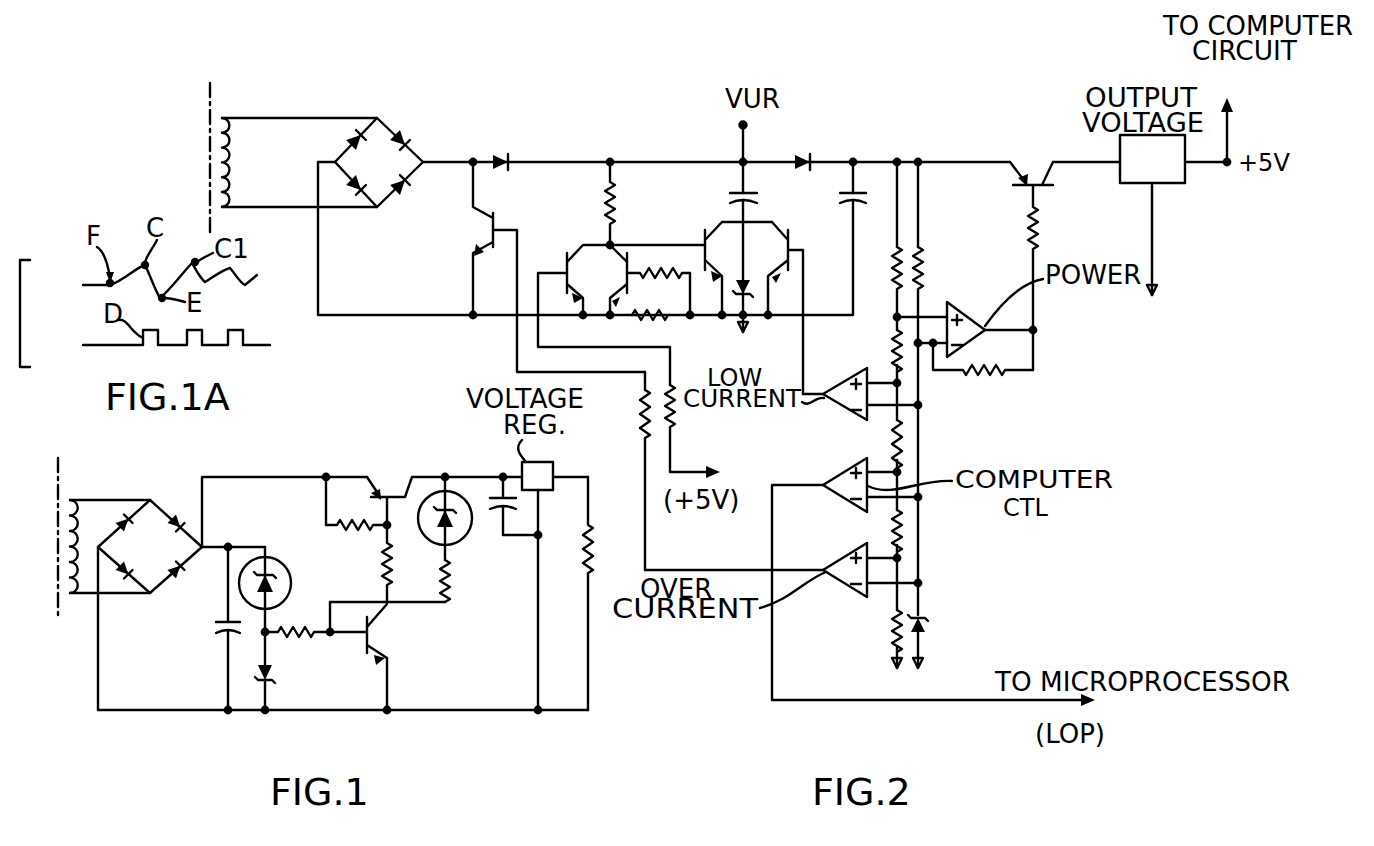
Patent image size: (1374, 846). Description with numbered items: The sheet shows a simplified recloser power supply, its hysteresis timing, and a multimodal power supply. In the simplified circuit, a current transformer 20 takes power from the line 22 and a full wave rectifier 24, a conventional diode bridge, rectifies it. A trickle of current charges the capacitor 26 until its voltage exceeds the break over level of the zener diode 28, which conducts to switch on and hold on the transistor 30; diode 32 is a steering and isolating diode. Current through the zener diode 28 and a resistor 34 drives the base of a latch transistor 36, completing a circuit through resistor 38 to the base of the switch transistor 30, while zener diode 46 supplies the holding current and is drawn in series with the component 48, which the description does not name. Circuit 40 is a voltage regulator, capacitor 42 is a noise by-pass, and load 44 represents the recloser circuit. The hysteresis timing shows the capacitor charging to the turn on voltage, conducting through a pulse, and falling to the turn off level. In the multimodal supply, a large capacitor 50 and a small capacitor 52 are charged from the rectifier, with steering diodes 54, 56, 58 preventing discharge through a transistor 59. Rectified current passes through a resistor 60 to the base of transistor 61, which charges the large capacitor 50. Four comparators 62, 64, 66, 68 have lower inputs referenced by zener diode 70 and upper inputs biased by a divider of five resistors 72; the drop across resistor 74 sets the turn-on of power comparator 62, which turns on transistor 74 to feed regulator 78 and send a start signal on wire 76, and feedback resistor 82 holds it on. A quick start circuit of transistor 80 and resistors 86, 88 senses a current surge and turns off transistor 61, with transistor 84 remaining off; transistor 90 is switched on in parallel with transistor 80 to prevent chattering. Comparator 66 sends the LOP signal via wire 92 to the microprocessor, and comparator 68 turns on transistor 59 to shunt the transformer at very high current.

In FIG. 2, the current transformer 20 is at (228, 172).
In FIG. 1, the current transformer 20 is at (76, 530).
In FIG. 2, the line 22 is at (207, 162).
In FIG. 1, the line 22 is at (58, 578).
In FIG. 2, the full wave rectifier 24 is at (386, 179).
In FIG. 1, the full wave rectifier 24 is at (158, 561).
In FIG. 1A, the capacitor 26 is at (148, 281).
In FIG. 1, the capacitor 26 is at (222, 634).
In FIG. 1, the zener diode 28 is at (283, 566).
In FIG. 1A, the switch transistor 30 is at (155, 346).
In FIG. 1, the switch transistor 30 is at (377, 488).
In FIG. 1, the diode 32 is at (275, 681).
In FIG. 1, the resistor 34 is at (298, 628).
In FIG. 1, the latch transistor 36 is at (389, 659).
In FIG. 1, the resistor 38 is at (384, 556).
In FIG. 1, the voltage regulator 40 is at (557, 470).
In FIG. 1, the capacitor 42 is at (492, 507).
In FIG. 1, the load 44 is at (591, 544).
In FIG. 1, the zener diode 46 is at (423, 494).
In FIG. 1, the current limiting resistor 48 is at (449, 572).
In FIG. 2, the large capacitor 50 is at (730, 196).
In FIG. 2, the small capacitor 52 is at (866, 194).
In FIG. 2, the steering diode 54 is at (502, 155).
In FIG. 2, the steering diode 56 is at (805, 156).
In FIG. 2, the steering diode 58 is at (748, 308).
In FIG. 2, the transistor 59 is at (480, 230).
In FIG. 2, the resistor 60 is at (614, 195).
In FIG. 2, the transistor 61 is at (705, 240).
In FIG. 2, the power comparator 62 is at (960, 314).
In FIG. 2, the comparator 64 is at (850, 380).
In FIG. 2, the comparator 66 is at (831, 503).
In FIG. 2, the comparator 68 is at (846, 598).
In FIG. 2, the zener diode 70 is at (924, 626).
In FIG. 2, the resistors 72 is at (886, 258).
In FIG. 2, the transistor 74 is at (895, 264).
In FIG. 2, the wire 76 is at (1233, 106).
In FIG. 2, the regulator 78 is at (1176, 184).
In FIG. 2, the transistor 80 is at (622, 262).
In FIG. 2, the resistor 82 is at (985, 373).
In FIG. 2, the transistor 84 is at (799, 259).
In FIG. 2, the sensing resistor 86 is at (634, 318).
In FIG. 2, the resistor 88 is at (658, 291).
In FIG. 2, the transistor 90 is at (566, 253).
In FIG. 2, the wire 92 is at (981, 703).